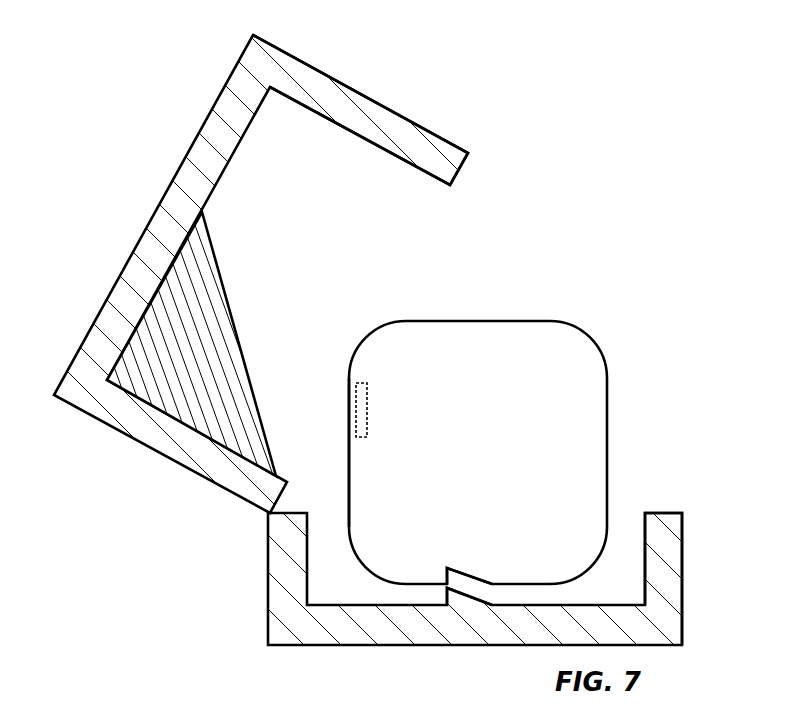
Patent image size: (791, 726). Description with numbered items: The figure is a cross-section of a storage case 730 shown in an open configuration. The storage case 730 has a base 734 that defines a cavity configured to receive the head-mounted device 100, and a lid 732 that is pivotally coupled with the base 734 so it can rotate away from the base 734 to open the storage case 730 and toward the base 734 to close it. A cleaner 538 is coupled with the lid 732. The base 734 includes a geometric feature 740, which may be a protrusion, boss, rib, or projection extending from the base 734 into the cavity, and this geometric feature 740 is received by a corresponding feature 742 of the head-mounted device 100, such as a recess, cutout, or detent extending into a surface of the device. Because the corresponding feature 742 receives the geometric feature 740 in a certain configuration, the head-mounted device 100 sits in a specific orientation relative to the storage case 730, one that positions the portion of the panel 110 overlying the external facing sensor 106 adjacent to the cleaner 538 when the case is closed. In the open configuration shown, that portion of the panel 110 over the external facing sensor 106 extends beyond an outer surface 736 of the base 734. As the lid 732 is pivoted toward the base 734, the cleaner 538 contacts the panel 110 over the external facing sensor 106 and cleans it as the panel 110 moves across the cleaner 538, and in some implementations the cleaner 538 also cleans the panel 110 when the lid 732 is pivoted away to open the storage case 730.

The storage case 730 is at (128, 138).
The lid 732 is at (368, 93).
The cleaner 538 is at (212, 303).
The head-mounted device 100 is at (551, 322).
The panel 110 is at (349, 410).
The external facing sensor 106 is at (367, 407).
The corresponding feature 742 is at (458, 571).
The base 734 is at (683, 590).
The outer surface 736 is at (662, 515).
The geometric feature 740 is at (460, 604).